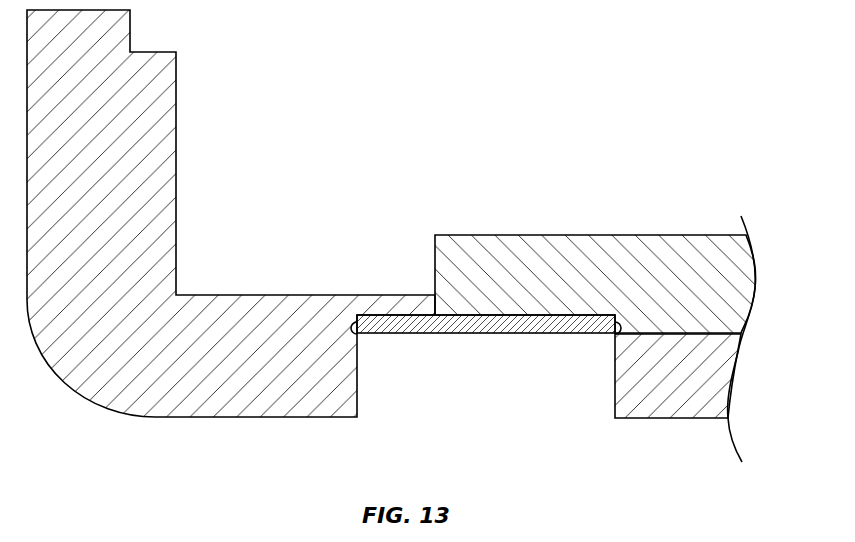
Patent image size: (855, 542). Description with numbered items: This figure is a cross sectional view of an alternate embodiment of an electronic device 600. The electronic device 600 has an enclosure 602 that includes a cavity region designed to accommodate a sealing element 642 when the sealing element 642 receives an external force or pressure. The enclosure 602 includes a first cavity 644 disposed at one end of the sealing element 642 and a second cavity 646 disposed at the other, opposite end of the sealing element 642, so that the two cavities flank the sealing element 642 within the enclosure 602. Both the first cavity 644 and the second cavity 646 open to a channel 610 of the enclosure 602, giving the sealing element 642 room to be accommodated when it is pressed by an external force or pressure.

The electronic device 600 is at (738, 60).
The enclosure 602 is at (122, 153).
The channel 610 is at (582, 441).
The sealing element 642 is at (403, 314).
The first cavity 644 is at (376, 349).
The second cavity 646 is at (597, 350).